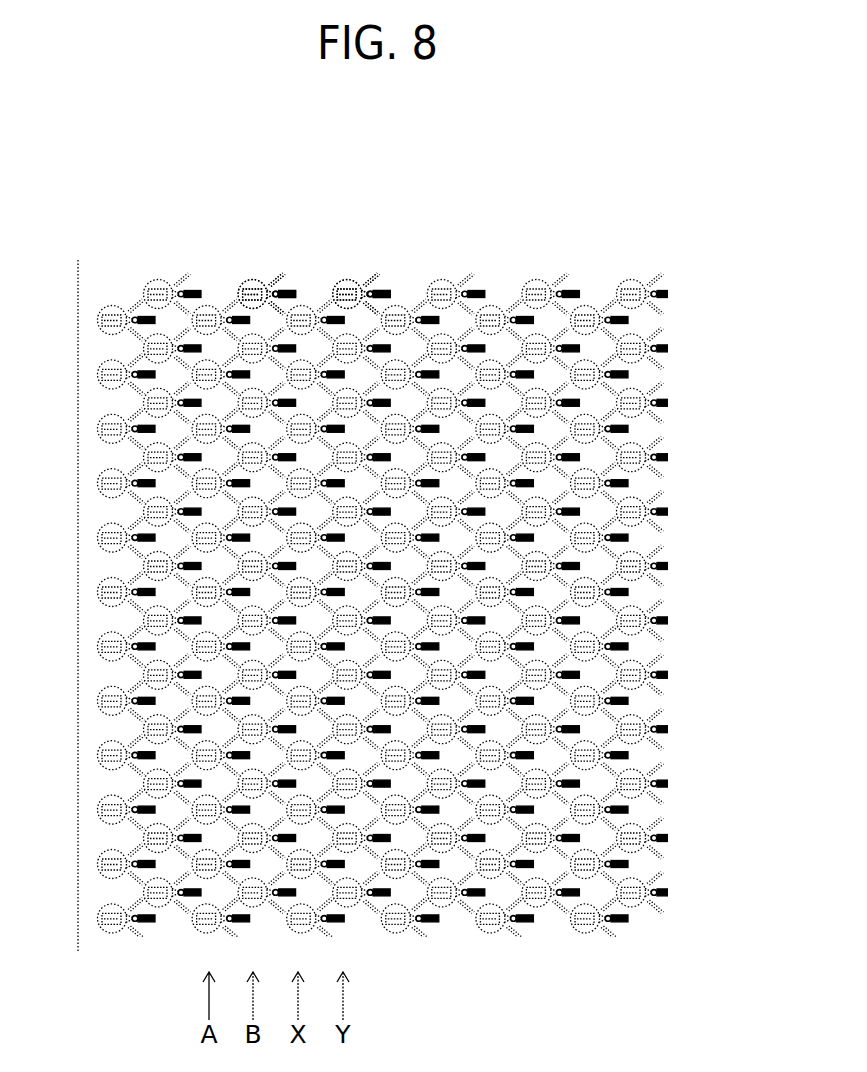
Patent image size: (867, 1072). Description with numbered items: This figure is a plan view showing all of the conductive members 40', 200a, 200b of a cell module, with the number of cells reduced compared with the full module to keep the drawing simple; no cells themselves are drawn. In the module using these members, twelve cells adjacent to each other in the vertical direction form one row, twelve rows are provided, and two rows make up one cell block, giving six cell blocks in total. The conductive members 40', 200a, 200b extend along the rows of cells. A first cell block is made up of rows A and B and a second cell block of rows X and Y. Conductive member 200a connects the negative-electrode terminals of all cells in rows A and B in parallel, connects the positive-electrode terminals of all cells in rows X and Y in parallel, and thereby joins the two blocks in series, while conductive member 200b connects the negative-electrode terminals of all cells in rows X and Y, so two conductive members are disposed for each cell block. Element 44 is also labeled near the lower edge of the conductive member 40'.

The conductive member 40' is at (386, 553).
The conductive member 200a is at (283, 276).
The conductive member 200b is at (384, 249).
The substrate edge 44 is at (138, 940).